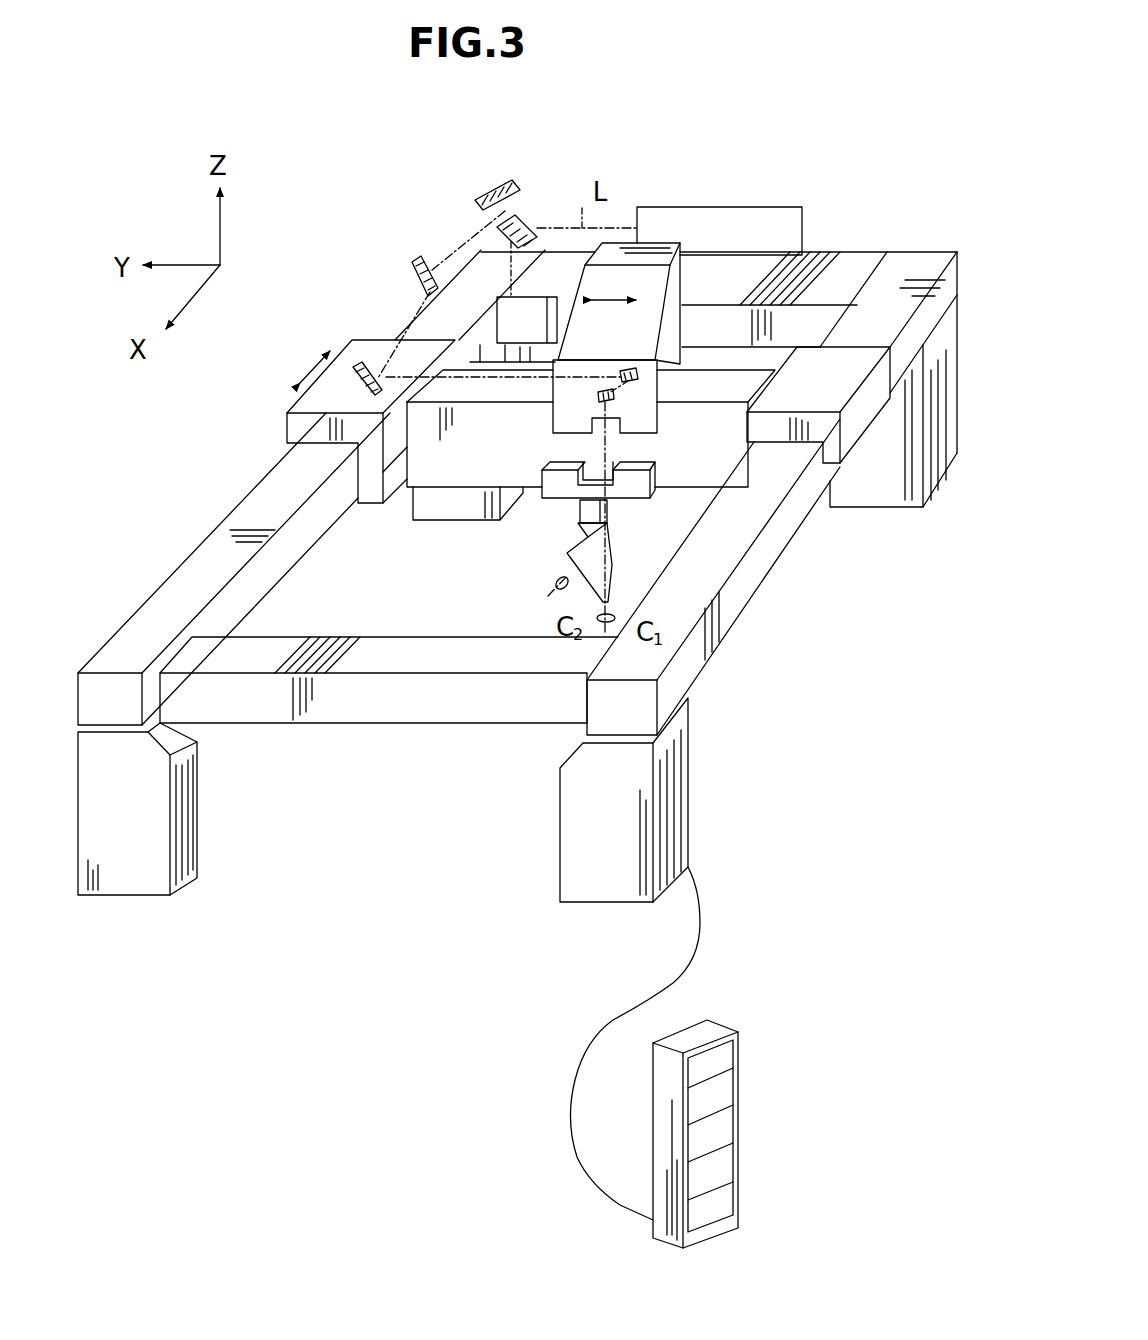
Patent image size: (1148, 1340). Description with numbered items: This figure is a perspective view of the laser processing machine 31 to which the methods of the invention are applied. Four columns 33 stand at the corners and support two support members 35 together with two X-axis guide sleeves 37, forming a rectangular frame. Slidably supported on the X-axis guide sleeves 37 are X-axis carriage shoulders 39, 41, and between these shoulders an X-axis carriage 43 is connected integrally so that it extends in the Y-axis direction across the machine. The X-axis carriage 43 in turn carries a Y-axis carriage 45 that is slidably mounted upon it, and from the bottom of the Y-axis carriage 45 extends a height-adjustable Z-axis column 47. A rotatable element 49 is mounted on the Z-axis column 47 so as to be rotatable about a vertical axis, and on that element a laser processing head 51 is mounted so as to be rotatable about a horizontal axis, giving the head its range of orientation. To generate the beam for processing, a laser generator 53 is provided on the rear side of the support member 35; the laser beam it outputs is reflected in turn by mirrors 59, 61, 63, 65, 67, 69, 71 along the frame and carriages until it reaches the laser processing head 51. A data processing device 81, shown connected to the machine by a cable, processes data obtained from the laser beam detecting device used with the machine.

The laser processing machine 31 is at (339, 190).
The columns 33 is at (147, 884).
The support members 35 is at (832, 265).
The X-axis guide sleeves 37 is at (210, 552).
The X-axis carriage shoulder 39 is at (862, 428).
The X-axis carriage shoulder 41 is at (318, 399).
The X-axis carriage 43 is at (447, 471).
The Y-axis carriage 45 is at (648, 430).
The Z-axis column 47 is at (577, 517).
The rotatable element 49 is at (580, 536).
The laser processing head 51 is at (570, 558).
The laser generator 53 is at (727, 206).
The mirror 59 is at (526, 292).
The mirror 61 is at (517, 187).
The mirror 63 is at (413, 273).
The mirror 65 is at (533, 242).
The mirror 67 is at (365, 362).
The mirror 69 is at (628, 367).
The mirror 71 is at (596, 397).
The data processing device 81 is at (737, 1090).